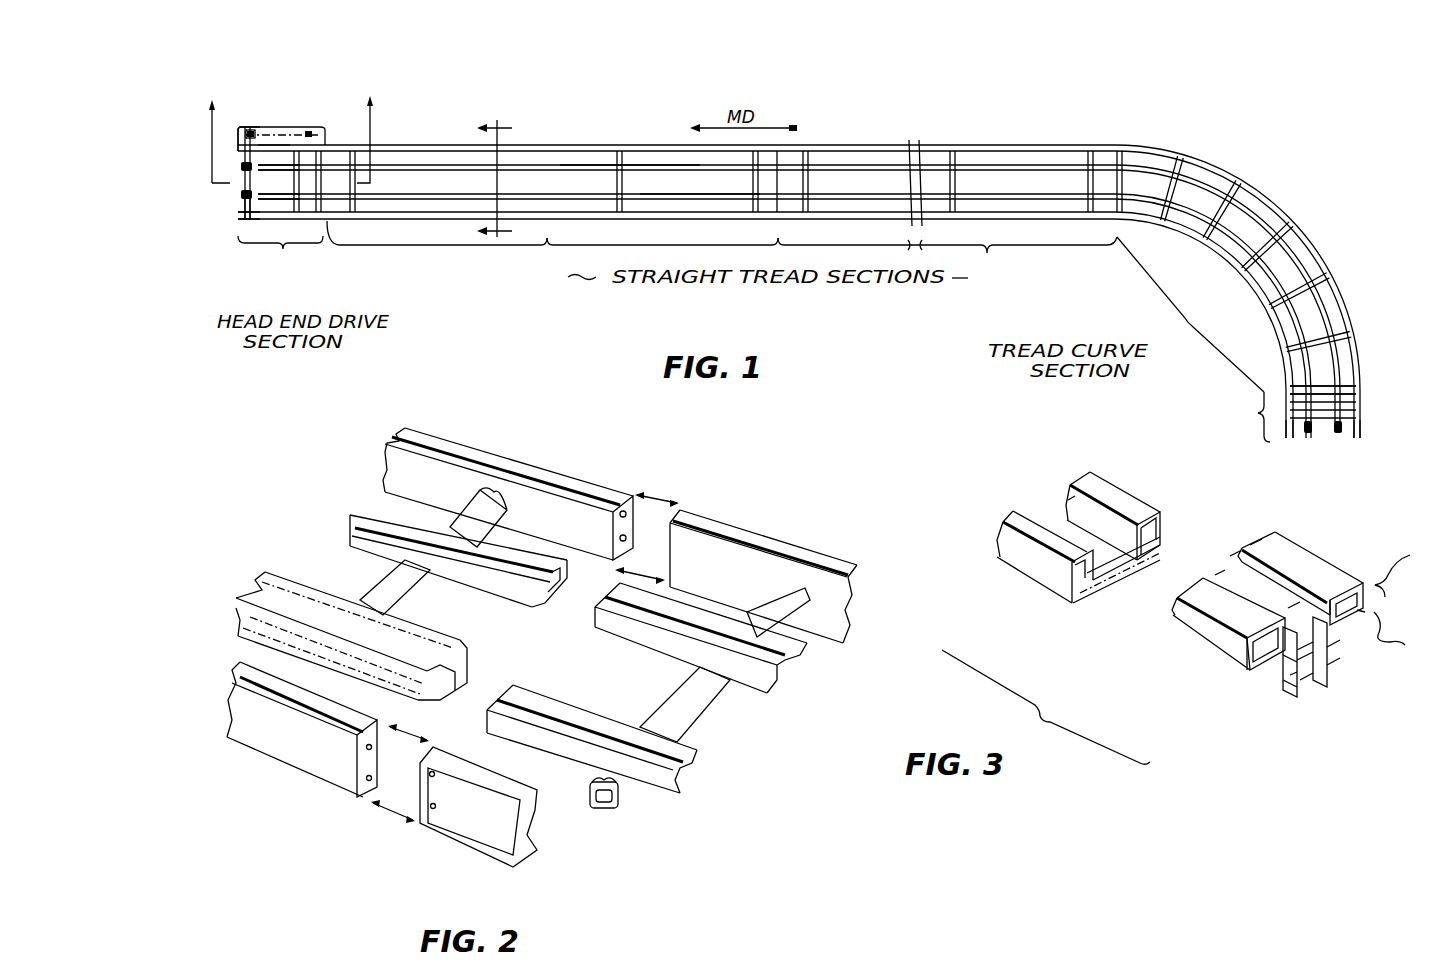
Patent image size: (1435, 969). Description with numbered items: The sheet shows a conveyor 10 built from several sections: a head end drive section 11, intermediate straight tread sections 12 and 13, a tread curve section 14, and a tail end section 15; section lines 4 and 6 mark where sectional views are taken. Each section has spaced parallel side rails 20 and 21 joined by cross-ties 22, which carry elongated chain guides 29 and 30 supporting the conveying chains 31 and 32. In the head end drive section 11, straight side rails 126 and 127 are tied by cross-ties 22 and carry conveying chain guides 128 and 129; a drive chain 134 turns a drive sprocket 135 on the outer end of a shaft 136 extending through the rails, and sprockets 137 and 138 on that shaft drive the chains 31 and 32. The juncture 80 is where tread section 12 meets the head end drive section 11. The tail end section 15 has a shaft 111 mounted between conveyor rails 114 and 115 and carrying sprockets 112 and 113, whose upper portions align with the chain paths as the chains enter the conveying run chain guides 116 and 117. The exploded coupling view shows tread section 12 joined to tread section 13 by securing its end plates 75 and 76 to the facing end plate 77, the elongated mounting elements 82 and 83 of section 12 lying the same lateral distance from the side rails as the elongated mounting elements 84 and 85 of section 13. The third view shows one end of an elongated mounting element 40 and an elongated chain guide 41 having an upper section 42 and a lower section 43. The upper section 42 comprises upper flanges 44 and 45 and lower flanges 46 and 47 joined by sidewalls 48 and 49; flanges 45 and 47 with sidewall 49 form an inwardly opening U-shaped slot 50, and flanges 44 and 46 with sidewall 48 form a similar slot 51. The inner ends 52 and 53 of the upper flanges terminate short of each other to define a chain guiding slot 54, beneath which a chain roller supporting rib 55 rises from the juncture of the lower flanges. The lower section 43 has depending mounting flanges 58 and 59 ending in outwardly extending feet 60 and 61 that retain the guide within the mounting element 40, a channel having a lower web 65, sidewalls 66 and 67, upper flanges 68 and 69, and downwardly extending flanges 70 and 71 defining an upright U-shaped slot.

In FIG. 1, the conveyor 10 is at (1253, 128).
In FIG. 1, the head end drive section 11 is at (284, 255).
In FIG. 1, the straight tread section 12 is at (548, 248).
In FIG. 2, the straight tread section 12 is at (538, 488).
In FIG. 1, the straight tread section 13 is at (988, 255).
In FIG. 2, the straight tread section 13 is at (794, 527).
In FIG. 1, the tread curve section 14 is at (1185, 329).
In FIG. 1, the tail end section 15 is at (1252, 417).
In FIG. 1, the side rail 20 is at (657, 218).
In FIG. 1, the side rail 21 is at (661, 151).
In FIG. 1, the cross-tie 22 is at (592, 151).
In FIG. 2, the cross-tie 22 is at (392, 593).
In FIG. 1, the chain guide 29 is at (707, 204).
In FIG. 1, the chain guide 30 is at (515, 158).
In FIG. 1, the conveying chain 31 is at (581, 199).
In FIG. 1, the conveying chain 32 is at (562, 161).
In FIG. 1, the juncture 80 is at (331, 241).
In FIG. 1, the side rail 126 is at (268, 146).
In FIG. 1, the side rail 127 is at (243, 222).
In FIG. 1, the conveying chain guide 128 is at (276, 199).
In FIG. 1, the conveying chain guide 129 is at (283, 163).
In FIG. 1, the drive chain 134 is at (264, 128).
In FIG. 1, the drive sprocket 135 is at (238, 127).
In FIG. 1, the shaft 136 is at (240, 203).
In FIG. 1, the sprocket 137 is at (240, 165).
In FIG. 1, the sprocket 138 is at (240, 195).
In FIG. 1, the shaft 111 is at (1343, 440).
In FIG. 1, the sprocket 112 is at (1300, 441).
In FIG. 1, the sprocket 113 is at (1330, 441).
In FIG. 1, the conveyor rail 114 is at (1285, 441).
In FIG. 1, the conveyor rail 115 is at (1362, 433).
In FIG. 1, the conveying run chain guide 116 is at (1335, 384).
In FIG. 1, the conveying run chain guide 117 is at (1340, 392).
In FIG. 1, the section line 4 is at (497, 173).
In FIG. 1, the section line 6 is at (289, 134).
In FIG. 2, the end plate 76 is at (627, 520).
In FIG. 2, the elongated mounting element 83 is at (532, 606).
In FIG. 2, the elongated mounting element 82 is at (462, 673).
In FIG. 2, the end plate 75 is at (353, 760).
In FIG. 2, the end plate 77 is at (423, 793).
In FIG. 2, the elongated mounting element 84 is at (540, 690).
In FIG. 2, the elongated mounting element 85 is at (643, 640).
In FIG. 3, the elongated mounting element 40 is at (1067, 613).
In FIG. 3, the elongated chain guide 41 is at (1278, 634).
In FIG. 3, the upper section 42 is at (1401, 563).
In FIG. 3, the lower section 43 is at (1399, 635).
In FIG. 3, the upper flange 44 is at (1294, 563).
In FIG. 3, the upper flange 45 is at (1217, 603).
In FIG. 3, the lower flange 46 is at (1350, 623).
In FIG. 3, the lower flange 47 is at (1277, 653).
In FIG. 3, the sidewall 48 is at (1353, 593).
In FIG. 3, the sidewall 49 is at (1278, 637).
In FIG. 3, the U-shaped slot 50 is at (1290, 682).
In FIG. 3, the U-shaped slot 51 is at (1360, 613).
In FIG. 3, the inner end 52 is at (1243, 548).
In FIG. 3, the inner end 53 is at (1217, 570).
In FIG. 3, the chain guiding slot 54 is at (1229, 552).
In FIG. 3, the chain roller supporting rib 55 is at (1288, 608).
In FIG. 3, the mounting flange 58 is at (1330, 647).
In FIG. 3, the mounting flange 59 is at (1303, 680).
In FIG. 3, the foot 60 is at (1337, 665).
In FIG. 3, the foot 61 is at (1290, 675).
In FIG. 3, the lower web 65 is at (1117, 583).
In FIG. 3, the sidewall 66 is at (1063, 582).
In FIG. 3, the sidewall 67 is at (1157, 518).
In FIG. 3, the upper flange 68 is at (1031, 521).
In FIG. 3, the upper flange 69 is at (1118, 500).
In FIG. 3, the flange 70 is at (1098, 561).
In FIG. 3, the flange 71 is at (1070, 506).